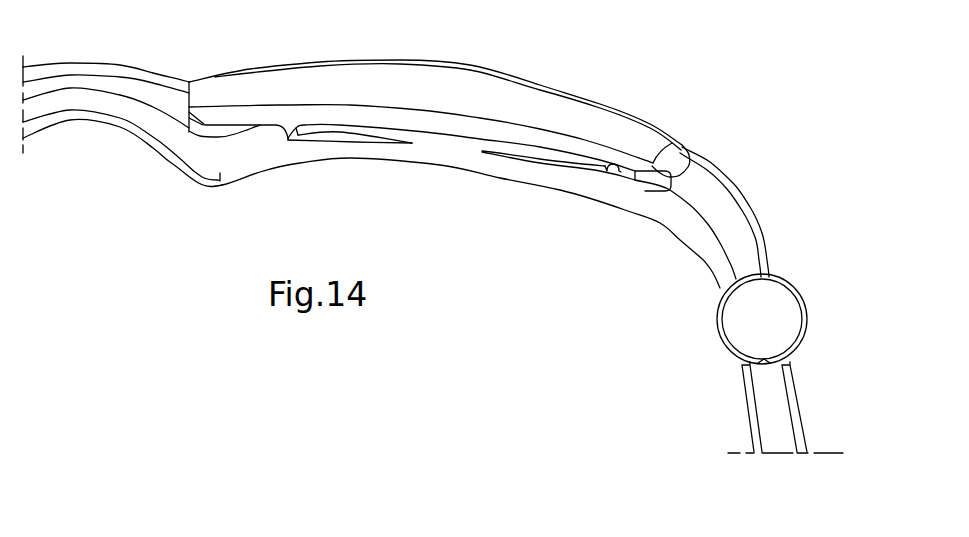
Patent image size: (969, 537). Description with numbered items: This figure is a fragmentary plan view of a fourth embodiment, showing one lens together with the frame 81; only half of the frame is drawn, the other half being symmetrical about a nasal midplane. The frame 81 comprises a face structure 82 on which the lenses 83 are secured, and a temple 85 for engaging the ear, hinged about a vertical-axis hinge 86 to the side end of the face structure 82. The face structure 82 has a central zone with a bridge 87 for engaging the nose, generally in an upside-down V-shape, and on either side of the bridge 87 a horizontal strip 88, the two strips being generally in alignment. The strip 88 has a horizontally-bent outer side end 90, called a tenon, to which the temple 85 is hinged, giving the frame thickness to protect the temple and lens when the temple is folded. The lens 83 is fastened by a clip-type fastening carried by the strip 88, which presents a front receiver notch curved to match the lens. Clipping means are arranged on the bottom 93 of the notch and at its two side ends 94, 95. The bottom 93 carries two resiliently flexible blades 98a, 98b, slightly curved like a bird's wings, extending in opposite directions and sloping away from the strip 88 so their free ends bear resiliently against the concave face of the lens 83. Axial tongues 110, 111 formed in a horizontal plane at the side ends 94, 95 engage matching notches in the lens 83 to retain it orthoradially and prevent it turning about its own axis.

The frame 81 is at (122, 229).
The face structure 82 is at (728, 161).
The lens 83 is at (617, 104).
The temple 85 is at (758, 412).
The hinge 86 is at (731, 313).
The bridge 87 is at (113, 128).
The horizontal strip 88 is at (448, 163).
The outer side end (tenon) 90 is at (748, 238).
The bottom of the receiver notch 93 is at (614, 178).
The side end of the receiver notch 94 is at (658, 192).
The side end of the receiver notch 95 is at (203, 137).
The resiliently flexible blade 98a is at (333, 125).
The resiliently flexible blade 98b is at (537, 150).
The axial tongue 110 is at (654, 167).
The axial tongue 111 is at (233, 124).